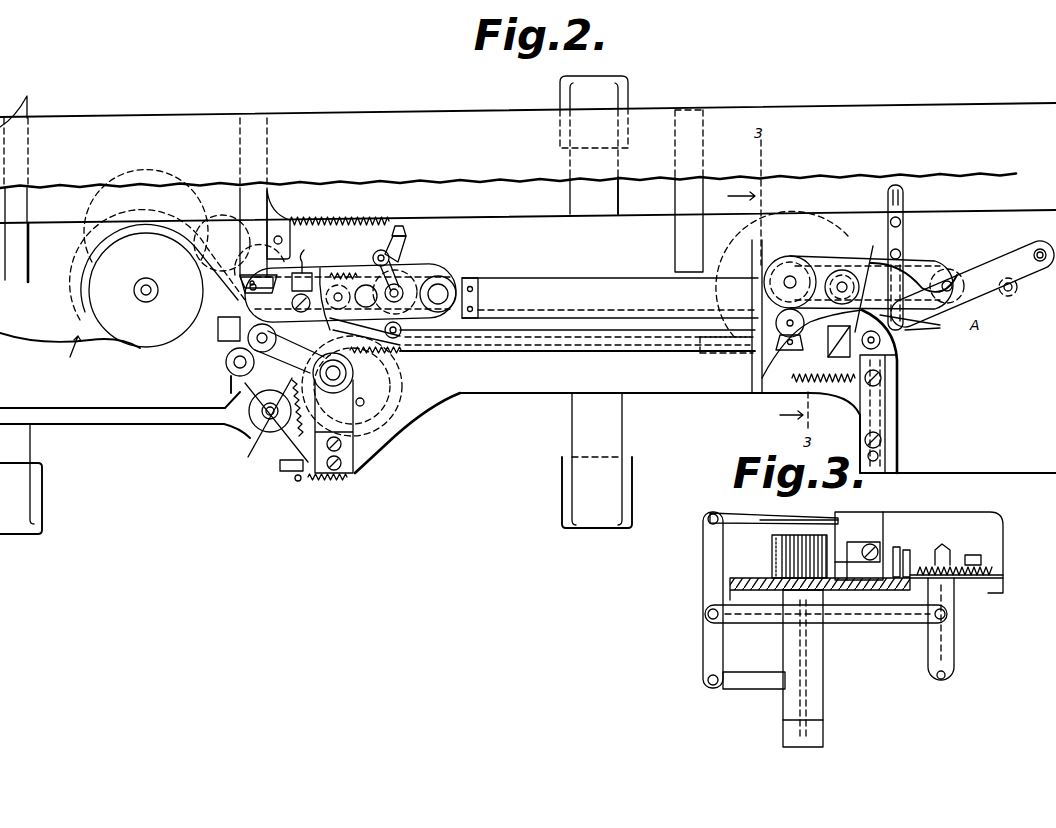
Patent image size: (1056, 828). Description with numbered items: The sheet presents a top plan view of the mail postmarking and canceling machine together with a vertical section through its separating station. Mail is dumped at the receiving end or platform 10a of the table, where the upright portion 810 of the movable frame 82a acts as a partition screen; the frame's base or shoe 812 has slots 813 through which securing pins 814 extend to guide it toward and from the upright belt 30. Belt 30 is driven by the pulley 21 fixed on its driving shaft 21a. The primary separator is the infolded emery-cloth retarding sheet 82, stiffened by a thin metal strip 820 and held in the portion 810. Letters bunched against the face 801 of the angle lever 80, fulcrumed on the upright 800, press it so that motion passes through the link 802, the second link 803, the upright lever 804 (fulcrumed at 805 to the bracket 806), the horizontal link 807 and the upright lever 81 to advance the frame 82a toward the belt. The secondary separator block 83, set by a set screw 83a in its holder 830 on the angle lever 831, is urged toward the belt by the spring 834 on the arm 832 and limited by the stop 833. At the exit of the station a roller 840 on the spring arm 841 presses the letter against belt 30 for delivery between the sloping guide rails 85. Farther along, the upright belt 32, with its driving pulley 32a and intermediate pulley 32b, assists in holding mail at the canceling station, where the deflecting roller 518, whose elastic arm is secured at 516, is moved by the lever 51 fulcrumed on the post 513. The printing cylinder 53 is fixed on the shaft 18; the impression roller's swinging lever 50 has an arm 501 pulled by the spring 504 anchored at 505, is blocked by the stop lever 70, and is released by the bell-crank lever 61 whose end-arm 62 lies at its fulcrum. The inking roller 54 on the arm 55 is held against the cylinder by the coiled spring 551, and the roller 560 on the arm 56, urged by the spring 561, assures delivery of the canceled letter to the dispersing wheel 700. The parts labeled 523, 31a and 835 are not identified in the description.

In FIG. 2, the dispersing wheel 700 is at (122, 263).
In FIG. 2, the frame securing point 505 is at (289, 216).
In FIG. 2, the spring 504 is at (330, 218).
In FIG. 2, the end-arm of bell crank lever 62 is at (400, 224).
In FIG. 2, the arm of lever 501 is at (406, 243).
In FIG. 2, the belt 32 is at (400, 285).
In FIG. 2, the pulley 32b is at (420, 266).
In FIG. 2, the driving pulley 32a is at (268, 294).
In FIG. 2, the lever 70 is at (311, 273).
In FIG. 2, the lever 50 is at (330, 272).
In FIG. 2, the bell crank lever 61 is at (338, 286).
In FIG. 2, the guide rails 85 is at (624, 330).
In FIG. 2, the securing point of arm 516 is at (523, 352).
In FIG. 2, the deflecting roller 518 is at (378, 331).
In FIG. 2, the spring 561 is at (413, 363).
In FIG. 2, the arm 56 is at (125, 415).
In FIG. 2, the inking roller 54 is at (262, 422).
In FIG. 2, the roller 560 is at (222, 340).
In FIG. 2, the post 513 is at (232, 366).
In FIG. 2, the arm 55 is at (232, 387).
In FIG. 2, the shaft 18 is at (333, 413).
In FIG. 2, the lever 51 is at (407, 433).
In FIG. 2, the printing cylinder 53 is at (380, 372).
In FIG. 2, the spring bracket 523 is at (283, 466).
In FIG. 2, the coiled spring 551 is at (333, 482).
In FIG. 2, the pulley 21 is at (806, 214).
In FIG. 2, the driving shaft 21a is at (790, 281).
In FIG. 2, the belt 30 is at (926, 264).
In FIG. 2, the angle lever 80 is at (972, 284).
In FIG. 3, the angle lever 80 is at (795, 519).
In FIG. 2, the upright 800 is at (1040, 249).
In FIG. 3, the upright 800 is at (775, 532).
In FIG. 2, the pin 31a is at (997, 315).
In FIG. 2, the receiving end 10a is at (1037, 339).
In FIG. 2, the upright lever 804 is at (905, 190).
In FIG. 3, the upright lever 804 is at (703, 563).
In FIG. 2, the second link 803 is at (903, 214).
In FIG. 3, the second link 803 is at (708, 513).
In FIG. 2, the link 802 is at (923, 221).
In FIG. 3, the link 802 is at (752, 515).
In FIG. 2, the angle lever 831 is at (863, 286).
In FIG. 2, the roller 840 is at (772, 330).
In FIG. 2, the spring arm 841 is at (735, 338).
In FIG. 2, the set screw 83a is at (760, 345).
In FIG. 2, the spring 834 is at (762, 380).
In FIG. 2, the holder 830 is at (823, 354).
In FIG. 3, the holder 830 is at (886, 546).
In FIG. 2, the arm 832 is at (800, 380).
In FIG. 3, the arm 832 is at (912, 553).
In FIG. 2, the stop 833 is at (812, 388).
In FIG. 2, the plate 835 is at (663, 460).
In FIG. 2, the strip 820 is at (880, 346).
In FIG. 2, the face of lever 801 is at (885, 342).
In FIG. 2, the retarding sheet 82 is at (912, 330).
In FIG. 2, the slots 813 is at (863, 414).
In FIG. 2, the securing pins 814 is at (882, 440).
In FIG. 3, the securing pins 814 is at (983, 557).
In FIG. 2, the carrier frame 82a is at (900, 433).
In FIG. 2, the base member 812 is at (875, 468).
In FIG. 3, the base member 812 is at (915, 578).
In FIG. 2, the upright portion 810 is at (900, 464).
In FIG. 3, the upright portion 810 is at (1000, 536).
In FIG. 3, the horizontal link 807 is at (748, 620).
In FIG. 3, the fulcrum 805 is at (710, 685).
In FIG. 3, the bracket 806 is at (738, 681).
In FIG. 3, the block 83 is at (859, 546).
In FIG. 3, the upright lever 81 is at (940, 640).